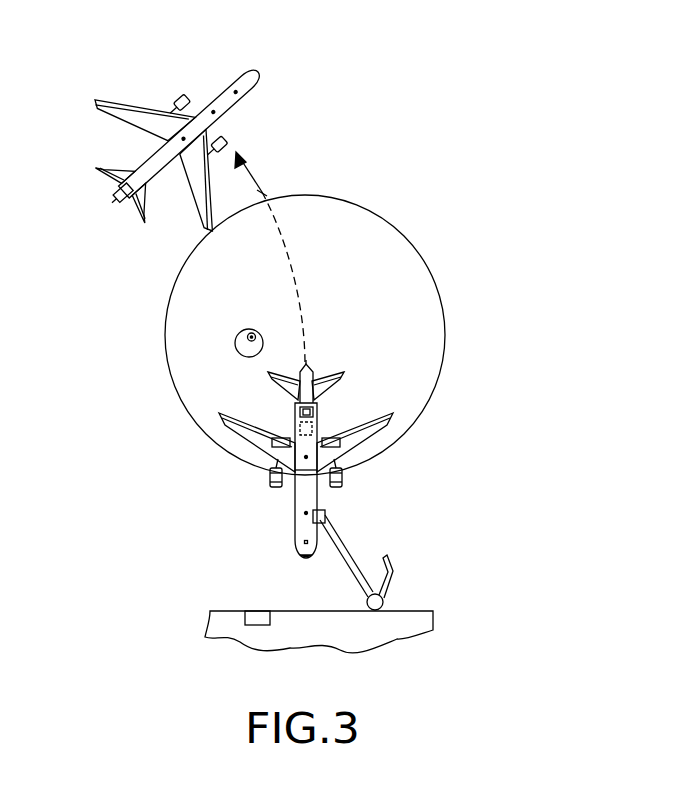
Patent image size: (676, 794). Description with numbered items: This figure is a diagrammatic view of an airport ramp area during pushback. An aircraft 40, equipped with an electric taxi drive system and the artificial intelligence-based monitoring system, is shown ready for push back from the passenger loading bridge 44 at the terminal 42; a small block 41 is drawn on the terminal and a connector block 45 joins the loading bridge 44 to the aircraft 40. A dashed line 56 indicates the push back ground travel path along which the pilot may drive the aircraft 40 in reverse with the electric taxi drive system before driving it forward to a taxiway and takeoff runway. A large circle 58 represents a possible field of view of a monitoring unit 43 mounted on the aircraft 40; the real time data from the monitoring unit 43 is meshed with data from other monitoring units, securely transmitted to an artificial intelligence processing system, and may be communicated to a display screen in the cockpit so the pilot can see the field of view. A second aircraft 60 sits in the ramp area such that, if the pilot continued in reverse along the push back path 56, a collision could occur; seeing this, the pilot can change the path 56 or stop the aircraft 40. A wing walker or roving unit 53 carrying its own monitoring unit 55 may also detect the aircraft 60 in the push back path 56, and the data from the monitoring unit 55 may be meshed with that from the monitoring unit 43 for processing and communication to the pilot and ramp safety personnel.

The aircraft 60 is at (206, 84).
The push back ground travel path 56 is at (263, 193).
The field of view circle 58 is at (445, 332).
The wing walker or roving unit 53 is at (235, 343).
The monitoring unit 55 is at (251, 333).
The aircraft 40 is at (262, 517).
The monitoring unit 43 is at (315, 425).
The connector block 45 is at (325, 516).
The passenger loading bridge 44 is at (350, 572).
The terminal 42 is at (333, 635).
The ground unit 41 is at (258, 625).